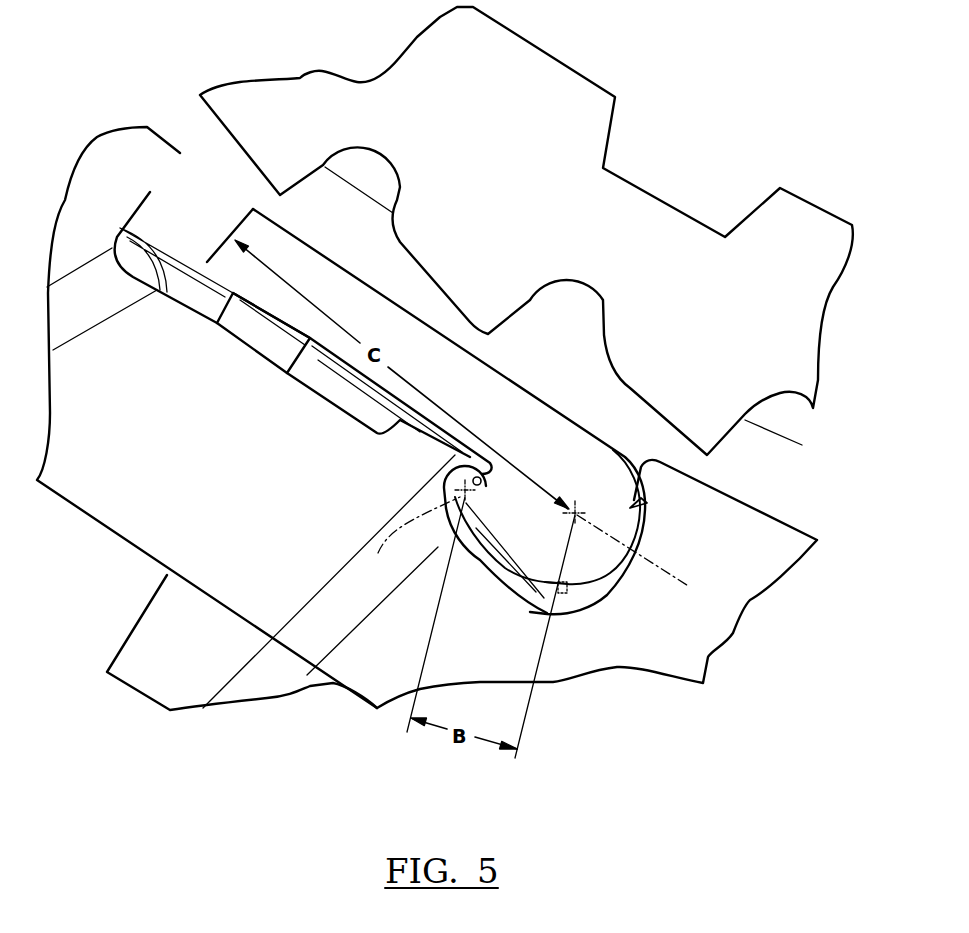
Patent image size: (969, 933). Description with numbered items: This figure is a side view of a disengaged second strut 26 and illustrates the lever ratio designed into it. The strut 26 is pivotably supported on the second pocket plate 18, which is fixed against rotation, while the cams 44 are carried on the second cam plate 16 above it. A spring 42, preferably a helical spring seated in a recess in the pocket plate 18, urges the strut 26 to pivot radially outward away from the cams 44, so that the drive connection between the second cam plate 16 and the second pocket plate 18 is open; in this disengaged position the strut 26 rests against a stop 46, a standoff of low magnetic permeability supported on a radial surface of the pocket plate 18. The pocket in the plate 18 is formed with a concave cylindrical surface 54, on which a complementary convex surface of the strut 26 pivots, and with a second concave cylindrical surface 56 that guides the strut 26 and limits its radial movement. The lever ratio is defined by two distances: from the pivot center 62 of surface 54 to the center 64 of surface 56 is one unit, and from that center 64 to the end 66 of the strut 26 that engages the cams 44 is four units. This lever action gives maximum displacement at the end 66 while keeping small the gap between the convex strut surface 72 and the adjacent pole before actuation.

The second cam plate 16 is at (557, 248).
The second pocket plate 18 is at (767, 508).
The second strut 26 is at (489, 409).
The spring 42 is at (513, 592).
The cams 44 is at (300, 171).
The stop 46 is at (255, 338).
The concave cylindrical surface 54 is at (457, 487).
The concave cylindrical surface 56 is at (632, 507).
The pivot center 62 is at (413, 541).
The center 64 is at (632, 559).
The end 66 is at (240, 230).
The convex strut surface 72 is at (607, 577).